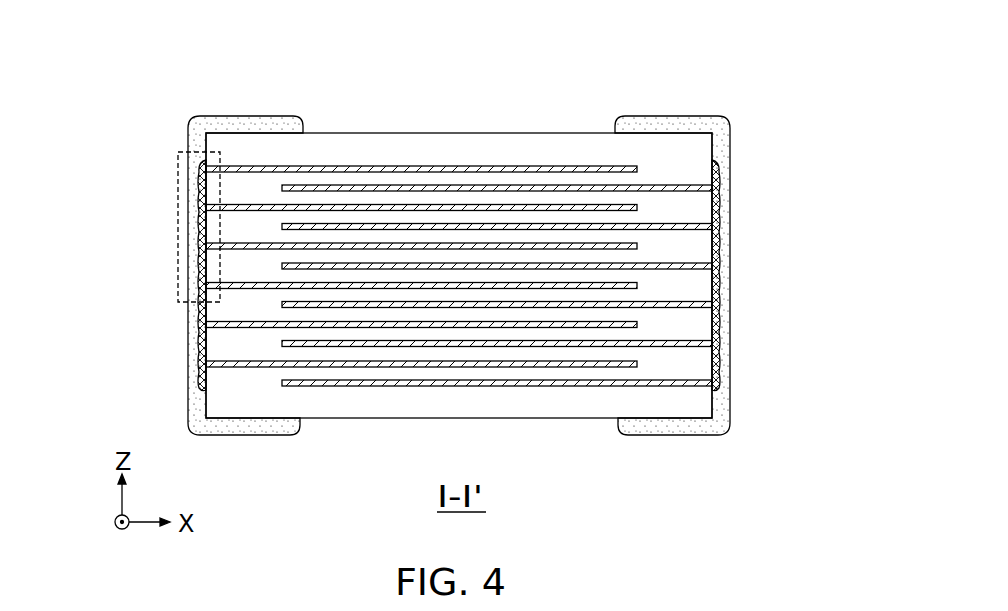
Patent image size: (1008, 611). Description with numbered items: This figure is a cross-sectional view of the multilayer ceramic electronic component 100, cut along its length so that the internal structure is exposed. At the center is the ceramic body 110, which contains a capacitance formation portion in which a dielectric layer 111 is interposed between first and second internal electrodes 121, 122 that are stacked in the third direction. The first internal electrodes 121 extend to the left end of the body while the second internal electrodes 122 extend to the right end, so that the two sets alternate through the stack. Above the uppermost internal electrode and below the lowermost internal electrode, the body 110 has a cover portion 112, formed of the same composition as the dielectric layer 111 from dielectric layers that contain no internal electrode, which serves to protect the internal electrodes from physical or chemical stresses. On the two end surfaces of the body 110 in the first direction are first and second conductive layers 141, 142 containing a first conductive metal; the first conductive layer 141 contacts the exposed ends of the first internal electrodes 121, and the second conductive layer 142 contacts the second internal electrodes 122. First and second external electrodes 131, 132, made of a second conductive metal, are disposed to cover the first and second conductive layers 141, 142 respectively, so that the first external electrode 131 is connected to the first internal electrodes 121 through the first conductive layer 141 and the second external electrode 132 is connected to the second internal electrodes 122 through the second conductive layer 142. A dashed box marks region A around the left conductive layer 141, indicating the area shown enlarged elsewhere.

The multilayer ceramic electronic component 100 is at (380, 29).
The ceramic body 110 is at (462, 133).
The dielectric layer 111 is at (655, 362).
The cover portion 112 is at (542, 150).
The first internal electrode 121 is at (372, 366).
The second internal electrode 122 is at (418, 386).
The first external electrode 131 is at (246, 117).
The second external electrode 132 is at (672, 118).
The first conductive layer 141 is at (200, 268).
The second conductive layer 142 is at (720, 258).
The enlarged region A is at (178, 172).